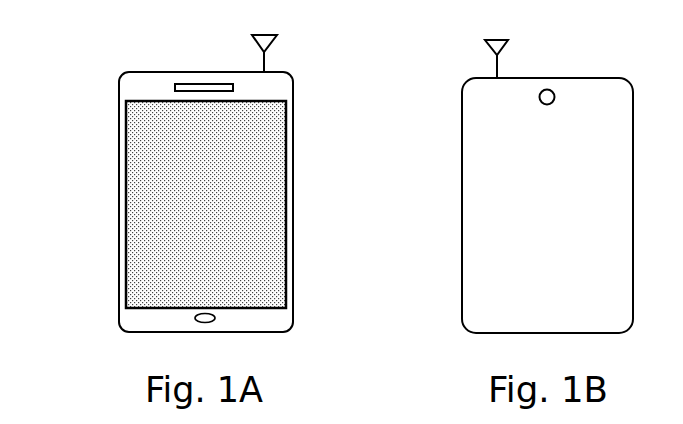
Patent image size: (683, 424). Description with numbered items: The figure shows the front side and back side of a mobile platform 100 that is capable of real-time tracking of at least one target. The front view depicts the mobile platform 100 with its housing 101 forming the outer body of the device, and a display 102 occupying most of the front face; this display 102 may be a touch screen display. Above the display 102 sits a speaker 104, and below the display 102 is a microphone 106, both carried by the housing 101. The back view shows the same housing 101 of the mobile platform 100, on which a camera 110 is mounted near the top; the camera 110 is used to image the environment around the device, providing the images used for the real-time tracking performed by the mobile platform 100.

In FIG. 1A, the mobile platform 100 is at (114, 49).
In FIG. 1B, the mobile platform 100 is at (414, 67).
In FIG. 1A, the housing 101 is at (119, 224).
In FIG. 1B, the housing 101 is at (462, 122).
In FIG. 1A, the display 102 is at (286, 208).
In FIG. 1A, the speaker 104 is at (173, 88).
In FIG. 1A, the microphone 106 is at (119, 315).
In FIG. 1B, the camera 110 is at (552, 89).